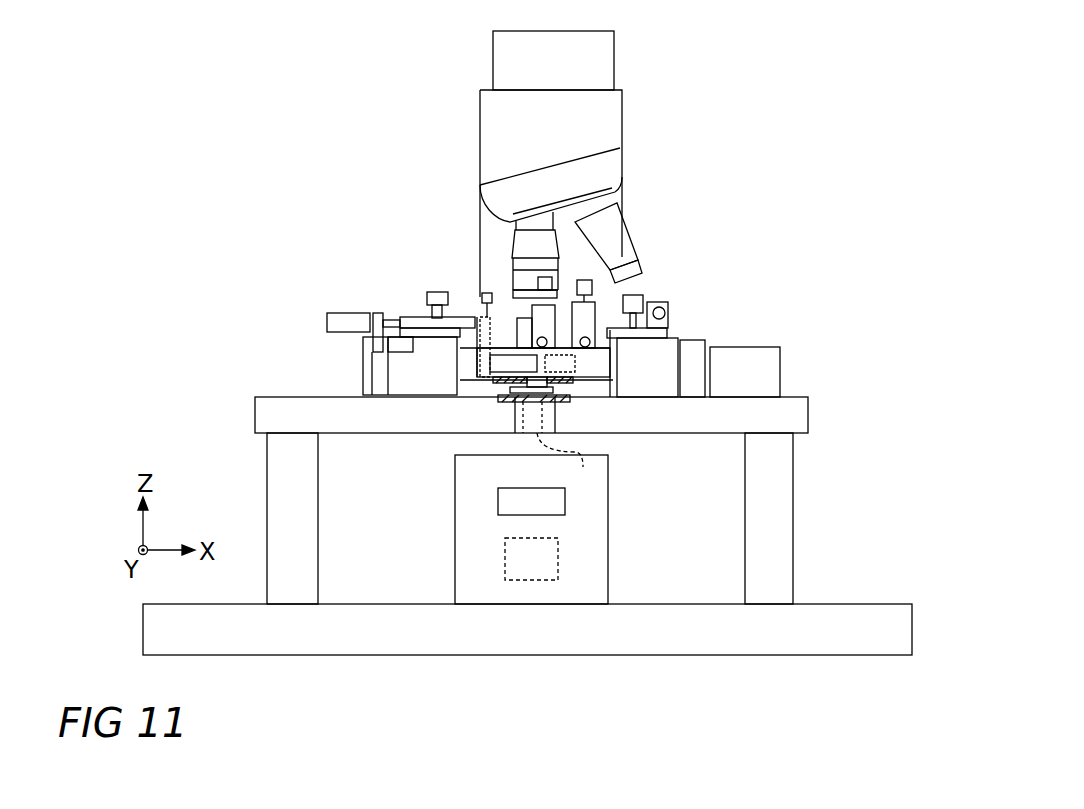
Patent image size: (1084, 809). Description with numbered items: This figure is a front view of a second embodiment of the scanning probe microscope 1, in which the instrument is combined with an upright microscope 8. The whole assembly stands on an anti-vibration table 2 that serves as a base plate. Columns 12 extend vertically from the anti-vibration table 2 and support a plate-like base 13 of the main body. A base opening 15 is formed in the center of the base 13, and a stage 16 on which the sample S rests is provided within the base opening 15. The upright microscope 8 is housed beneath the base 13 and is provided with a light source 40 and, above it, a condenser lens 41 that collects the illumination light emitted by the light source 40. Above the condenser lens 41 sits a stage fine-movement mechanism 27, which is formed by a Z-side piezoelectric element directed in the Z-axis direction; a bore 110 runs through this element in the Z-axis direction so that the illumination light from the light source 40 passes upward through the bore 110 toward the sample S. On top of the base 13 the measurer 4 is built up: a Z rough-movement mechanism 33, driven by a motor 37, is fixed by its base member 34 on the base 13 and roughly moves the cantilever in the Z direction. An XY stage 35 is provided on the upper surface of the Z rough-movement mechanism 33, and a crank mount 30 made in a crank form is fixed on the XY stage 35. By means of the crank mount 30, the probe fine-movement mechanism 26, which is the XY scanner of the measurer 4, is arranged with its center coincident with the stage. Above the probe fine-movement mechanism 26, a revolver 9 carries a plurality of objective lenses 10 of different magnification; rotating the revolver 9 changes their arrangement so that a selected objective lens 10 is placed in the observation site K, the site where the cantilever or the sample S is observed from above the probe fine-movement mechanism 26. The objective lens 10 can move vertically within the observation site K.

The scanning probe microscope 1 is at (782, 68).
The anti-vibration table 2 is at (850, 612).
The measurer 4 is at (826, 367).
The upright microscope 8 is at (628, 498).
The revolver 9 is at (603, 200).
The objective lens 10 is at (505, 298).
The column 12 is at (268, 486).
The base 13 is at (808, 411).
The base opening 15 is at (555, 384).
The stage 16 is at (530, 395).
The probe fine-movement mechanism 26 is at (614, 236).
The stage fine-movement mechanism 27 is at (523, 420).
The crank mount 30 is at (438, 322).
The Z rough-movement mechanism 33 is at (398, 368).
The base member 34 is at (372, 383).
The XY stage 35 is at (420, 335).
The motor 37 is at (757, 363).
The light source 40 is at (505, 552).
The condenser lens 41 is at (508, 500).
The bore 110 is at (593, 477).
The observation site K is at (500, 246).
The sample S is at (600, 388).